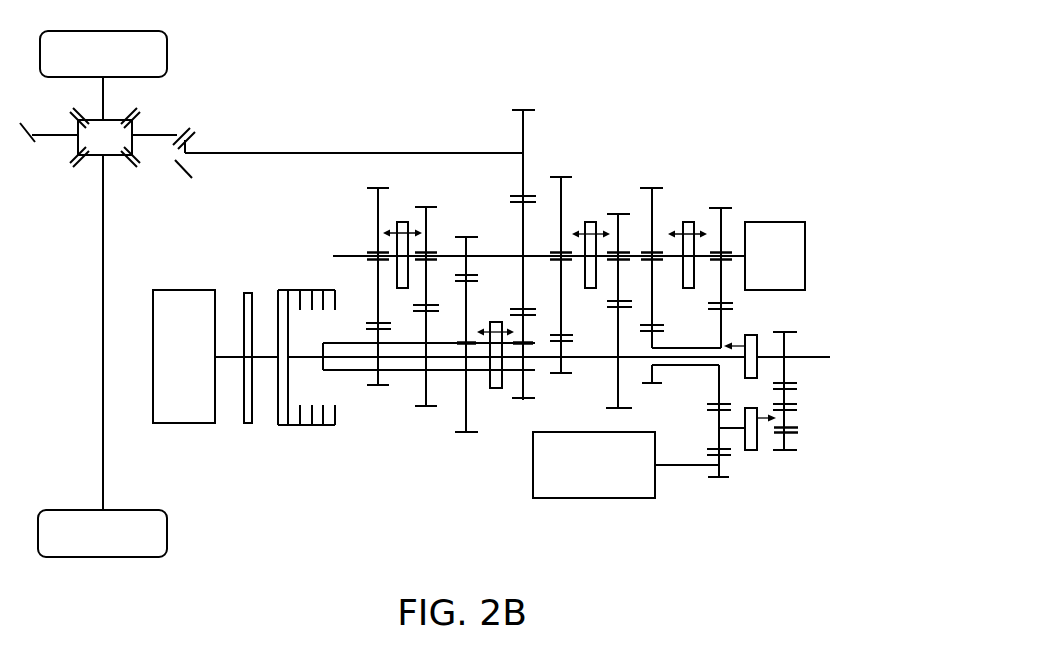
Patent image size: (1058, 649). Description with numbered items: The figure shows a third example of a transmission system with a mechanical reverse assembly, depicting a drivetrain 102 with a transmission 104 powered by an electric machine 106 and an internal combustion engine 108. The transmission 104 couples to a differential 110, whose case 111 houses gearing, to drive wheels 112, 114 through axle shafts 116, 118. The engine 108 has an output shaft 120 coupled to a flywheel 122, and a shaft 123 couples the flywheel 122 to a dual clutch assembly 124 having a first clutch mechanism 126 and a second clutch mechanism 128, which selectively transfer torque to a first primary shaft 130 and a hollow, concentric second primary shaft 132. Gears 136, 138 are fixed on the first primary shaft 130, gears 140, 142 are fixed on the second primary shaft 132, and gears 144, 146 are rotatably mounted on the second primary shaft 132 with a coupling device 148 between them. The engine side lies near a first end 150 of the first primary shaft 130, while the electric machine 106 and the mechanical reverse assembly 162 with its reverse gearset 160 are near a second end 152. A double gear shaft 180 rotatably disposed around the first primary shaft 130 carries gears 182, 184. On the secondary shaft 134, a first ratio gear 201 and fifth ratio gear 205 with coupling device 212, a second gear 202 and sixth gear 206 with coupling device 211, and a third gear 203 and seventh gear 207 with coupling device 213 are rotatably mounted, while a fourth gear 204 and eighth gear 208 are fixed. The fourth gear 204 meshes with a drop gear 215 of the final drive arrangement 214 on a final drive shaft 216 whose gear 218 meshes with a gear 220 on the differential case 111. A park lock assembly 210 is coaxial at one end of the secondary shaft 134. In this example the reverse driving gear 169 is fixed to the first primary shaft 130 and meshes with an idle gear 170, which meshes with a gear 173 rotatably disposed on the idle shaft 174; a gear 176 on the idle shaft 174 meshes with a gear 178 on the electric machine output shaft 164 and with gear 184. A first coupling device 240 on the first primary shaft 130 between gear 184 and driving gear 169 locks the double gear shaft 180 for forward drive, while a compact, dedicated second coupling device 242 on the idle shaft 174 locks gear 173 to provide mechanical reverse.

The drivetrain 102 is at (433, 50).
The transmission 104 is at (428, 510).
The electric machine 106 is at (594, 465).
The internal combustion engine 108 is at (184, 356).
The differential 110 is at (52, 172).
The differential case 111 is at (120, 157).
The drive wheel 112 is at (168, 527).
The drive wheel 114 is at (168, 52).
The axle shaft 116 is at (103, 478).
The axle shaft 118 is at (103, 92).
The output shaft 120 is at (223, 355).
The flywheel 122 is at (248, 425).
The shaft 123 is at (270, 350).
The dual clutch assembly 124 is at (310, 272).
The first clutch mechanism 126 is at (288, 435).
The second clutch mechanism 128 is at (319, 440).
The first primary shaft 130 is at (815, 357).
The second primary shaft 132 is at (340, 343).
The secondary shaft 134 is at (365, 256).
The gear 136 is at (572, 373).
The gear 138 is at (610, 305).
The gear 140 is at (425, 407).
The gear 142 is at (385, 388).
The gear 144 is at (466, 433).
The gear 146 is at (528, 400).
The coupling device 148 is at (496, 388).
The first end 150 is at (272, 505).
The second end 152 is at (874, 292).
The reverse gearset 160 is at (858, 490).
The mechanical reverse assembly 162 is at (890, 367).
The output shaft 164 is at (678, 466).
The driving gear 169 is at (790, 332).
The idle gear 170 is at (797, 386).
The gear 173 is at (790, 450).
The idle shaft 174 is at (736, 430).
The gear 176 is at (712, 449).
The gear 178 is at (722, 478).
The double gear shaft 180 is at (676, 366).
The gear 182 is at (650, 386).
The gear 184 is at (715, 309).
The first ratio gear 201 is at (561, 177).
The second gear 202 is at (378, 189).
The third gear 203 is at (653, 188).
The fourth gear 204 is at (512, 200).
The fifth ratio gear 205 is at (619, 214).
The sixth gear 206 is at (427, 207).
The seventh gear 207 is at (722, 208).
The eighth gear 208 is at (468, 240).
The park lock assembly 210 is at (775, 256).
The coupling device 211 is at (398, 222).
The coupling device 212 is at (590, 222).
The coupling device 213 is at (688, 222).
The final drive arrangement 214 is at (358, 97).
The drop gear 215 is at (513, 110).
The final drive shaft 216 is at (283, 153).
The gear 218 is at (186, 172).
The gear 220 is at (185, 125).
The first coupling device 240 is at (757, 335).
The second coupling device 242 is at (757, 450).